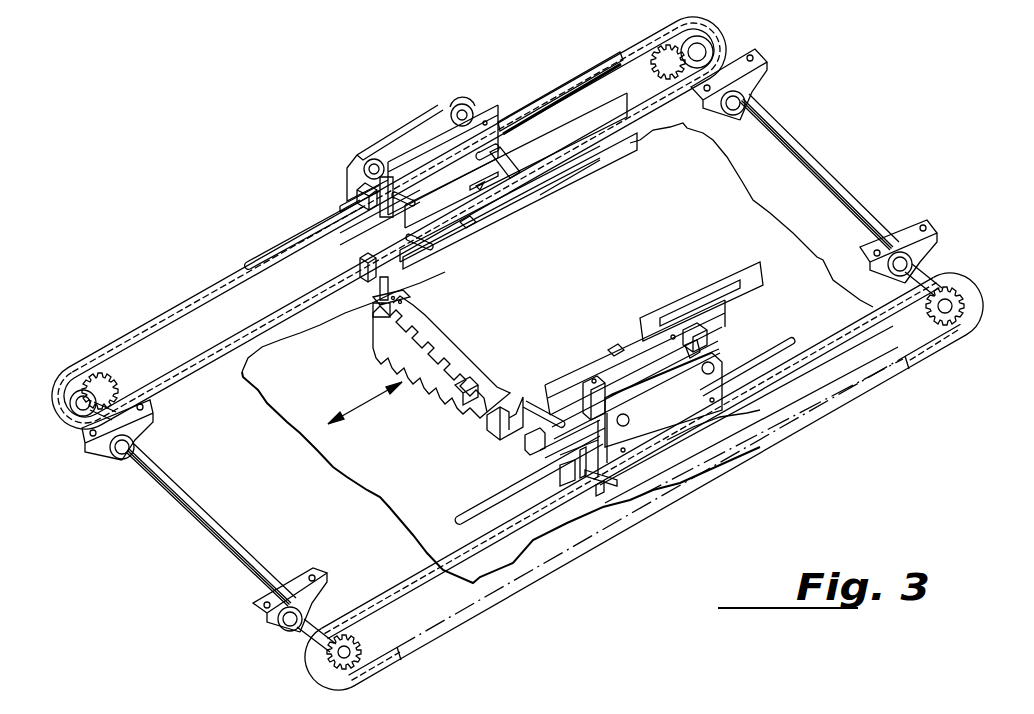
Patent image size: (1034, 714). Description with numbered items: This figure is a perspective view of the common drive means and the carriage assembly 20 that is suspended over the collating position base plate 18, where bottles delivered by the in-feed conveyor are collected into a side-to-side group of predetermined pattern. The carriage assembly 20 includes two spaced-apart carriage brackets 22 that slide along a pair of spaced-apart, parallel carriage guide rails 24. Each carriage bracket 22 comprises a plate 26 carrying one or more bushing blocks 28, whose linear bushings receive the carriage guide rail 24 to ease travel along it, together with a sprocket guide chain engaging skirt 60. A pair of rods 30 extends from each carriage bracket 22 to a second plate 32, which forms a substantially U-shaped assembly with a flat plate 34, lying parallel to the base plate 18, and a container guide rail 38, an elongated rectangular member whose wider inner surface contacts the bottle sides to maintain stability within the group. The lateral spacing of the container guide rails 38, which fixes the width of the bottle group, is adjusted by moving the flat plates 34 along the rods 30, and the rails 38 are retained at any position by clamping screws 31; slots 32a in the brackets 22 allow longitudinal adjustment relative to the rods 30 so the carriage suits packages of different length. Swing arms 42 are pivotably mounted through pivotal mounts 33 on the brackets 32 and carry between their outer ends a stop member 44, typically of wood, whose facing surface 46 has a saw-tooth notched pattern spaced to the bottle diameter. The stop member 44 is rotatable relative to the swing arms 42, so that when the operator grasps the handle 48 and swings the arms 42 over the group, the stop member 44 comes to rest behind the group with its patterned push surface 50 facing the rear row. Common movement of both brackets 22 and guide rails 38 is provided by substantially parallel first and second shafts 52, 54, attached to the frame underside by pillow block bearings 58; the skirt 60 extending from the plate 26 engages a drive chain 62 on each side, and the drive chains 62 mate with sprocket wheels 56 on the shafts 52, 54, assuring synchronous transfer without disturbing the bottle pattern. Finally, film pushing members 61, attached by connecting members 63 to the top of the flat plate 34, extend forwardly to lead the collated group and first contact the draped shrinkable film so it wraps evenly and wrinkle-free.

The collating position base plate 18 is at (713, 190).
The carriage assembly 20 is at (230, 202).
The carriage bracket 22 is at (498, 150).
The carriage guide rail 24 is at (257, 258).
The plate 26 is at (380, 133).
The bushing block 28 is at (357, 186).
The rod 30 is at (386, 162).
The clamping screw 31 is at (396, 190).
The second plate 32 is at (445, 177).
The slot 32a is at (515, 85).
The pivotal mount 33 is at (503, 195).
The flat plate 34 is at (503, 177).
The container guide rail 38 is at (598, 170).
The swing arm 42 is at (467, 227).
The stop member 44 is at (463, 370).
The facing surface 46 is at (457, 343).
The handle 48 is at (493, 436).
The push surface 50 is at (405, 358).
The first shaft 52 is at (820, 172).
The second shaft 54 is at (187, 510).
The sprocket wheel 56 is at (962, 297).
The pillow block bearing 58 is at (900, 235).
The skirt 60 is at (680, 430).
The film pushing member 61 is at (358, 246).
The drive chain 62 is at (937, 350).
The connecting member 63 is at (437, 240).